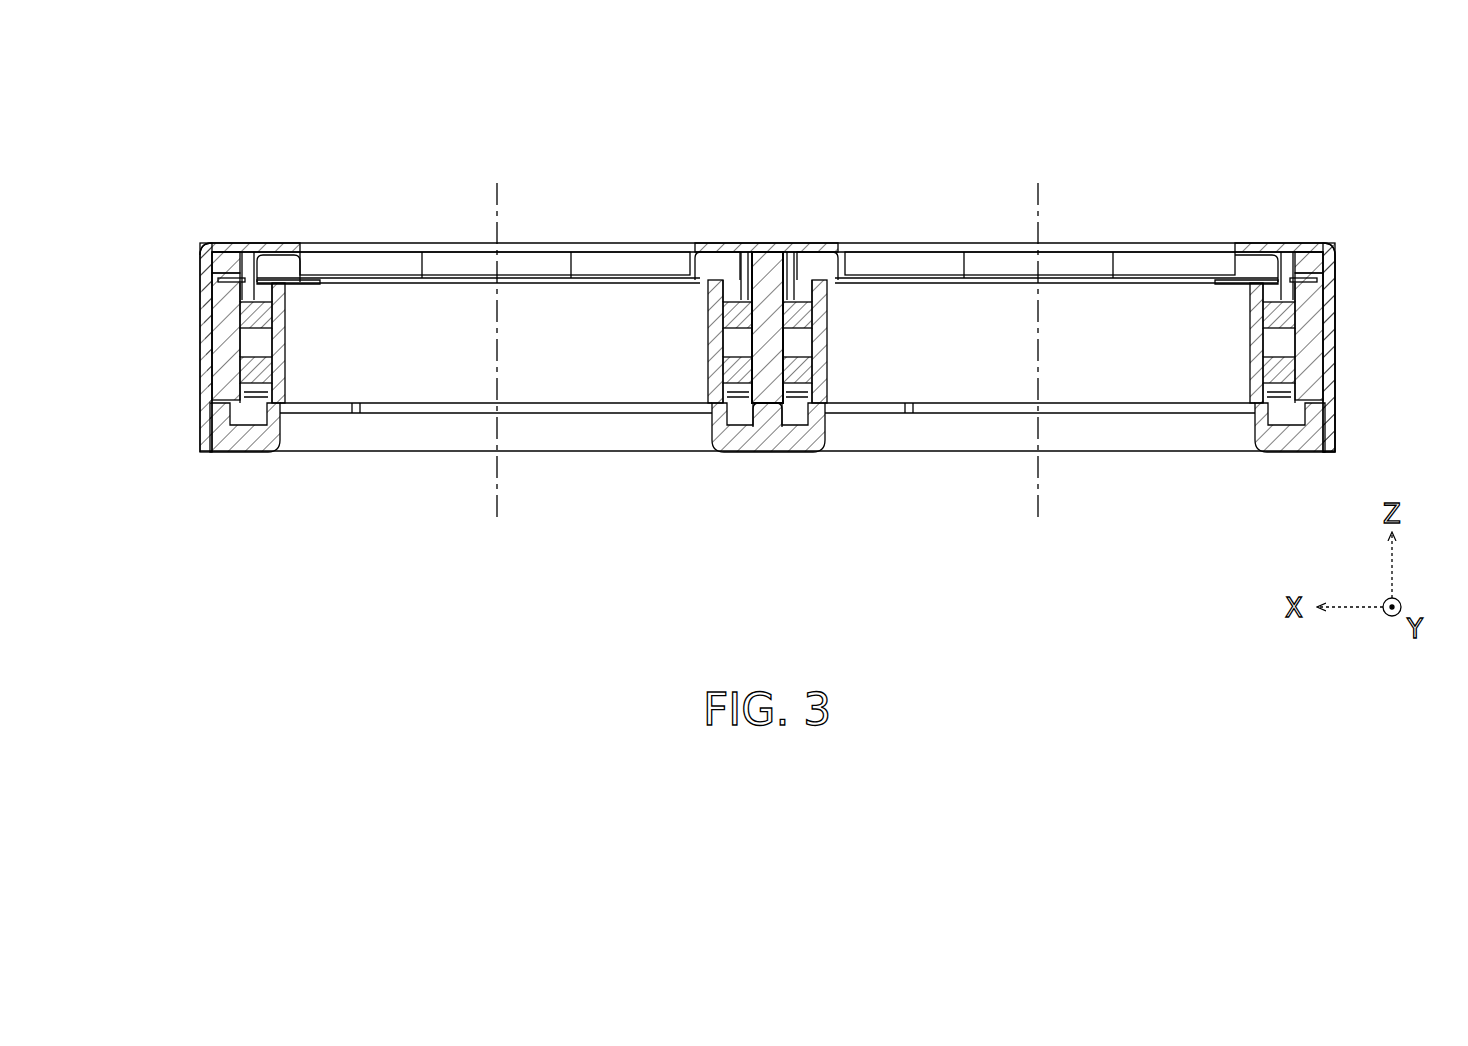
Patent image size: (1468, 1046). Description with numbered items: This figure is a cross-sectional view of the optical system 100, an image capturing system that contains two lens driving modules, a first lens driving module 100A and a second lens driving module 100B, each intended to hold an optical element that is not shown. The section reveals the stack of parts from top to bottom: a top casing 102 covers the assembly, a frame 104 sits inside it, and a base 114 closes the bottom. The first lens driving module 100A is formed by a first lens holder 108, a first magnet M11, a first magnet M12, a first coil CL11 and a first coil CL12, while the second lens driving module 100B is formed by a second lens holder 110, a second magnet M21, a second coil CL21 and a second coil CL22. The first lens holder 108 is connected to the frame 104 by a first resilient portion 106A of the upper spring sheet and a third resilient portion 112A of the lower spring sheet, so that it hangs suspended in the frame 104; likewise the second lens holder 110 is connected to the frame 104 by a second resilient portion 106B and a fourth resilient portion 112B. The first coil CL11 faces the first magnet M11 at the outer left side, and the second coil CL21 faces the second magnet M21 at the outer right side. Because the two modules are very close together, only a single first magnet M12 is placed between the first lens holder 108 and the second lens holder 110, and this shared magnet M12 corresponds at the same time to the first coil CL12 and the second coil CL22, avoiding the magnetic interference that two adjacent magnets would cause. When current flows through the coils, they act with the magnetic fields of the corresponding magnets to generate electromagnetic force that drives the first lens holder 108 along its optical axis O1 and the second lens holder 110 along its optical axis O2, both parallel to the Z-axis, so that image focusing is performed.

The optical system 100 is at (1427, 100).
The first lens driving module 100A is at (397, 228).
The second lens driving module 100B is at (1138, 228).
The top casing 102 is at (207, 278).
The frame 104 is at (1325, 276).
The first resilient portion 106A is at (227, 250).
The second resilient portion 106B is at (1306, 250).
The first lens holder 108 is at (725, 345).
The second lens holder 110 is at (815, 345).
The third resilient portion 112A is at (255, 422).
The fourth resilient portion 112B is at (1280, 422).
The base 114 is at (770, 430).
The first magnet M11 is at (225, 347).
The first magnet M12 is at (762, 300).
The second magnet M21 is at (1310, 347).
The first coil CL11 is at (243, 312).
The first coil CL12 is at (735, 305).
The second coil CL21 is at (1290, 312).
The second coil CL22 is at (800, 305).
The optical axis O1 is at (496, 338).
The optical axis O2 is at (1037, 338).